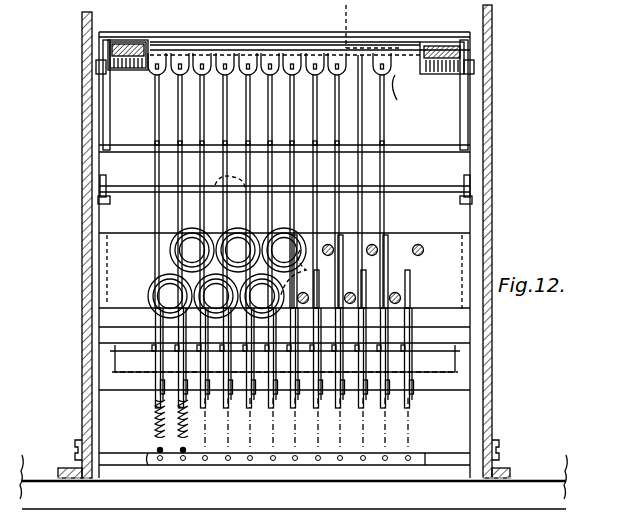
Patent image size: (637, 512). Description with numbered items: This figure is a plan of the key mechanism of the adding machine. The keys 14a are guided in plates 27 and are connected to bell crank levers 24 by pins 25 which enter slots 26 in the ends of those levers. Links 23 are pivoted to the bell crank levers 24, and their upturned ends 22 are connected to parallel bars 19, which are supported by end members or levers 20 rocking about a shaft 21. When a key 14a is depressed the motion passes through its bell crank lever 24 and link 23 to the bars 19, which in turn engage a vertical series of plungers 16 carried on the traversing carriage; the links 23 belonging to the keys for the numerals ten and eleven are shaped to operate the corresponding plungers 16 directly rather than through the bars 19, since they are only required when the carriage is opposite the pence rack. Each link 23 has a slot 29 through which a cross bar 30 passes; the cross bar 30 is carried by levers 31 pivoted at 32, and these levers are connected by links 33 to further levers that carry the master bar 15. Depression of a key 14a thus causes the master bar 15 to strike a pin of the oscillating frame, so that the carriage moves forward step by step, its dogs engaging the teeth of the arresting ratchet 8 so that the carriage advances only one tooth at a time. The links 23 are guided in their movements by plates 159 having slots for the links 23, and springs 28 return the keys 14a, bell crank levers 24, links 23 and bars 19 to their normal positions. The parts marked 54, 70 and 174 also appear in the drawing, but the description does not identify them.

The arresting ratchet 8 is at (345, 484).
The keys 14a is at (423, 228).
The master bar 15 is at (282, 26).
The plungers 16 is at (346, 18).
The parallel bars 19 is at (225, 48).
The end members or levers 20 is at (445, 42).
The shaft 21 is at (398, 98).
The upturned ends 22 is at (262, 78).
The links 23 is at (381, 38).
The bell crank levers 24 is at (378, 338).
The pins 25 is at (366, 242).
The slots 26 is at (326, 250).
The plates 27 is at (120, 310).
The springs 28 is at (182, 437).
The slot 29 is at (225, 177).
The cross bar 30 is at (146, 192).
The levers 31 is at (100, 200).
The pivot 32 is at (100, 182).
The links 33 is at (110, 115).
The bracket 54 is at (98, 63).
The latch box 70 is at (122, 44).
The plates 159 is at (444, 144).
The side wall 174 is at (84, 349).